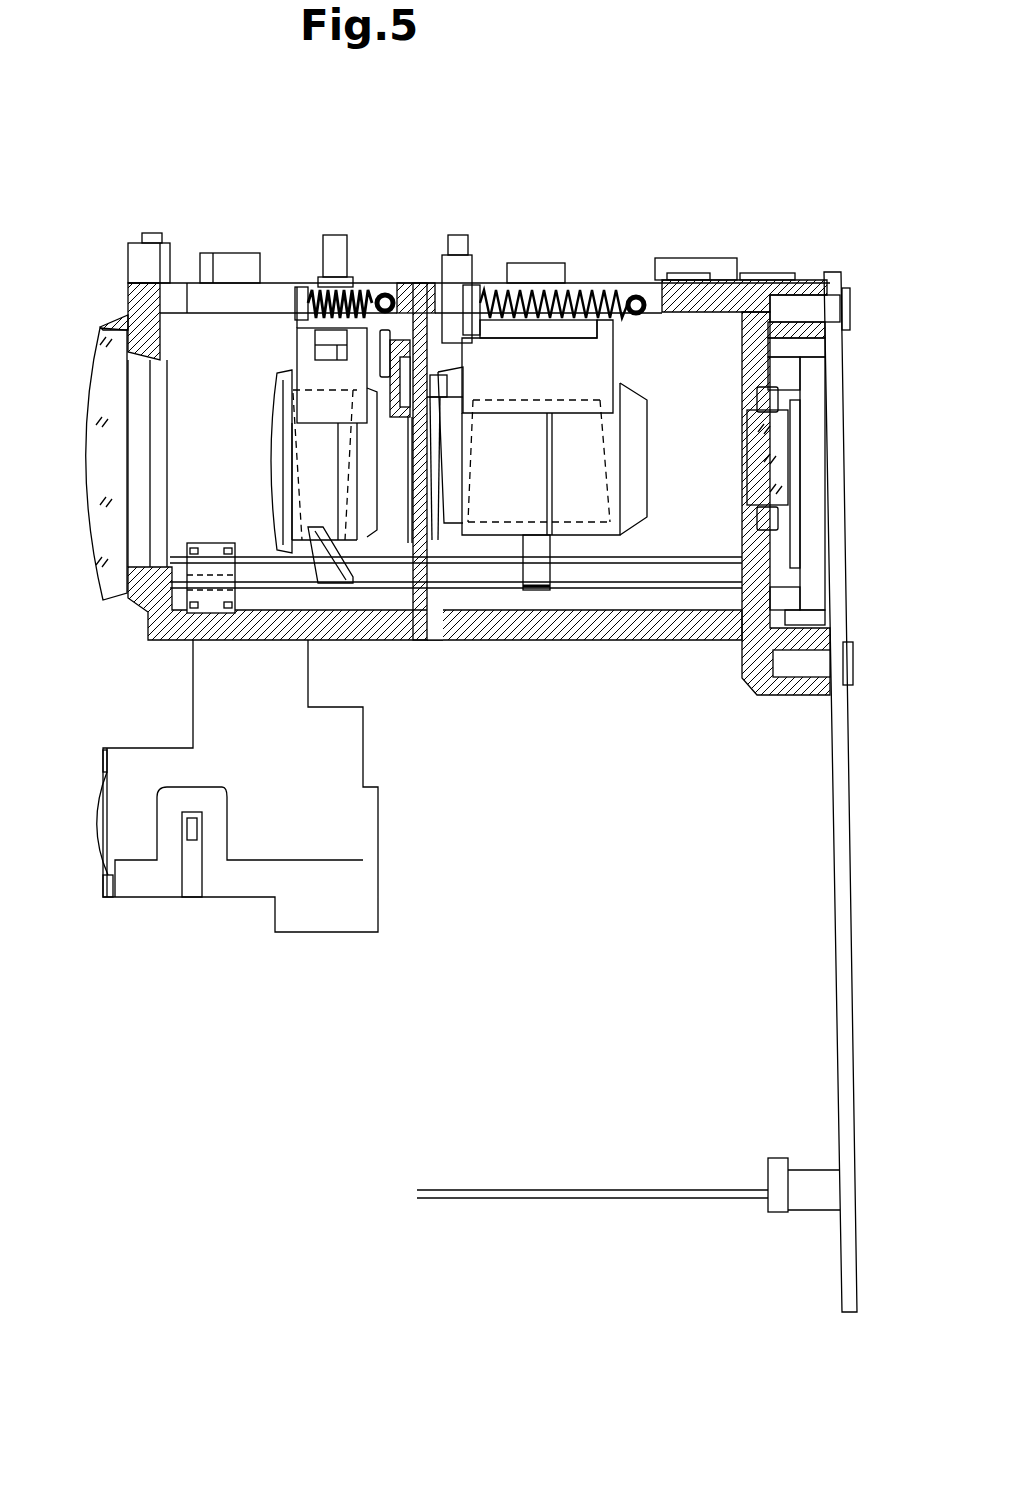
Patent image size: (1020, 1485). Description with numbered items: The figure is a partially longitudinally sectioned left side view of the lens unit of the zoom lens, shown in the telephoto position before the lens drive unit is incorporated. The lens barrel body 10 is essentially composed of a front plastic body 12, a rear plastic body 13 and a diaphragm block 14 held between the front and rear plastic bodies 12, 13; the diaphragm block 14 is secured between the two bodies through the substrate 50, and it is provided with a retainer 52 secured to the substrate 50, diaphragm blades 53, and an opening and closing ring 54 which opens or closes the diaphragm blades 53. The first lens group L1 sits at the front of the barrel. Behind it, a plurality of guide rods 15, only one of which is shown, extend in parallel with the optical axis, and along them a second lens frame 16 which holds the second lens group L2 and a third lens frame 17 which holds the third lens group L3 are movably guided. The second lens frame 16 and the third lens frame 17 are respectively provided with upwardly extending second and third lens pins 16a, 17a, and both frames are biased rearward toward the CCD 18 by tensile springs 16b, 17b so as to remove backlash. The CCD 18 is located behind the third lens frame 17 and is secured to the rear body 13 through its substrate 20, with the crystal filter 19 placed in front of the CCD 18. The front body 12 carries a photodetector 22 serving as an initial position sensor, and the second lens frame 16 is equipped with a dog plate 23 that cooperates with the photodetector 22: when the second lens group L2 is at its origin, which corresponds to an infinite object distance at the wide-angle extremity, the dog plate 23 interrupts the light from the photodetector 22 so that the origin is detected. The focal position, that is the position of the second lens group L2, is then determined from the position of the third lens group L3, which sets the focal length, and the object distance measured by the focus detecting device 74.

The lens barrel body 10 is at (810, 268).
The front plastic body 12 is at (232, 655).
The rear plastic body 13 is at (742, 617).
The diaphragm block 14 is at (435, 645).
The guide rods 15 is at (495, 577).
The second lens frame 16 is at (280, 400).
The second lens pin 16a is at (332, 260).
The tensile spring 16b is at (372, 285).
The third lens frame 17 is at (623, 440).
The third lens pin 17a is at (460, 240).
The tensile spring 17b is at (588, 298).
The CCD 18 is at (820, 497).
The crystal filter 19 is at (780, 432).
The substrate 20 is at (840, 800).
The photodetector 22 is at (172, 655).
The dog plate 23 is at (352, 590).
The substrate 50 is at (425, 330).
The retainer 52 is at (427, 397).
The diaphragm blades 53 is at (433, 545).
The opening and closing ring 54 is at (423, 360).
The focus detecting device 74 is at (132, 827).
The first lens group L1 is at (103, 572).
The second lens group L2 is at (347, 545).
The third lens group L3 is at (567, 528).